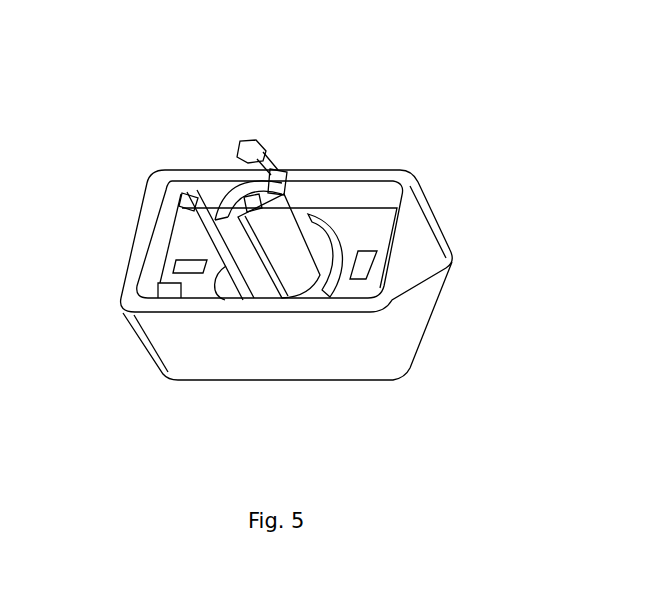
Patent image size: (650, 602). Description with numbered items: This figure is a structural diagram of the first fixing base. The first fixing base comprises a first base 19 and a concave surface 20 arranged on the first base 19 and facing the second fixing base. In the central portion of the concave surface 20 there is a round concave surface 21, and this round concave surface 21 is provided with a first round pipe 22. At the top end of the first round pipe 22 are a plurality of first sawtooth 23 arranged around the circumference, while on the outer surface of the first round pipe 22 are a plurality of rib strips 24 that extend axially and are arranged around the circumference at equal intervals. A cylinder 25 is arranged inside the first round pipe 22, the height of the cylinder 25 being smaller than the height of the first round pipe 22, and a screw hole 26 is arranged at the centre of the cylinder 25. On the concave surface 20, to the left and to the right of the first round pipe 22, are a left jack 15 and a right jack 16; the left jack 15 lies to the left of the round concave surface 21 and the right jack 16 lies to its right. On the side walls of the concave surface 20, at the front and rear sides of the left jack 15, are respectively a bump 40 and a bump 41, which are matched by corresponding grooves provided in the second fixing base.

The left jack 15 is at (185, 265).
The right jack 16 is at (362, 268).
The first base 19 is at (418, 264).
The concave surface 20 is at (362, 225).
The round concave surface 21 is at (228, 295).
The first round pipe 22 is at (266, 228).
The first sawtooth 23 is at (248, 150).
The rib strips 24 is at (302, 220).
The cylinder 25 is at (239, 190).
The screw hole 26 is at (252, 200).
The bump 40 is at (167, 292).
The bump 41 is at (190, 202).